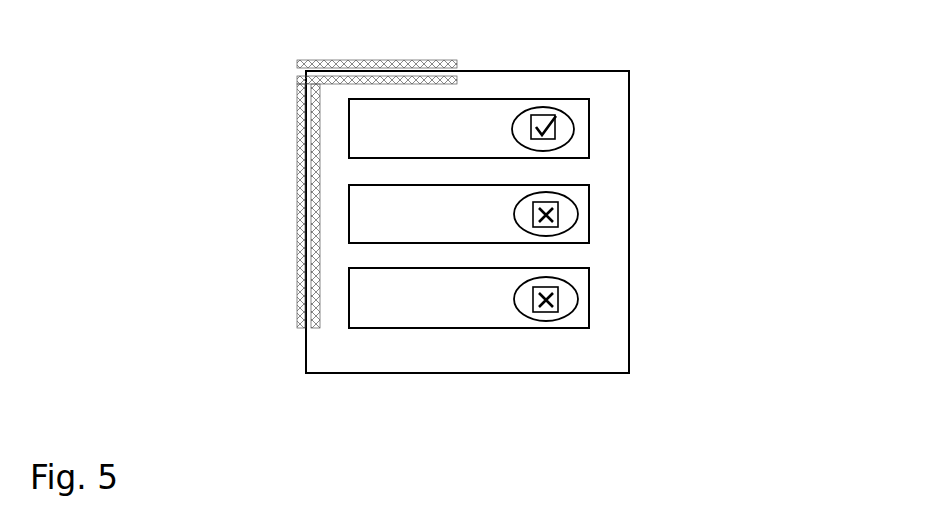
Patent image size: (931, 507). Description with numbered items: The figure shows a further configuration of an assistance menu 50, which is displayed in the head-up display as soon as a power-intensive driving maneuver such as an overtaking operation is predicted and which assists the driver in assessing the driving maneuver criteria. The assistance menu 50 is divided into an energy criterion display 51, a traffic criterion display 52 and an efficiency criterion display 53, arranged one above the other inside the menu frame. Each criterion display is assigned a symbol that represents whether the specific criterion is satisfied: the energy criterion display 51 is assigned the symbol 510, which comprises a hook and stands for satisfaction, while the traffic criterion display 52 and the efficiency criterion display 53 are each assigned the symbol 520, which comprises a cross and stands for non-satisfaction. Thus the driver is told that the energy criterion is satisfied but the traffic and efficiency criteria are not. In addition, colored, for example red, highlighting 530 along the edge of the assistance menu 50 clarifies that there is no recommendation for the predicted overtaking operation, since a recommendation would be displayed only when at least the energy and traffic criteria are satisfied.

The assistance menu 50 is at (468, 71).
The energy criterion display 51 is at (349, 130).
The traffic criterion display 52 is at (349, 215).
The efficiency criterion display 53 is at (349, 300).
The symbol 510 is at (575, 129).
The symbol 520 is at (578, 214).
The highlighting 530 is at (378, 62).